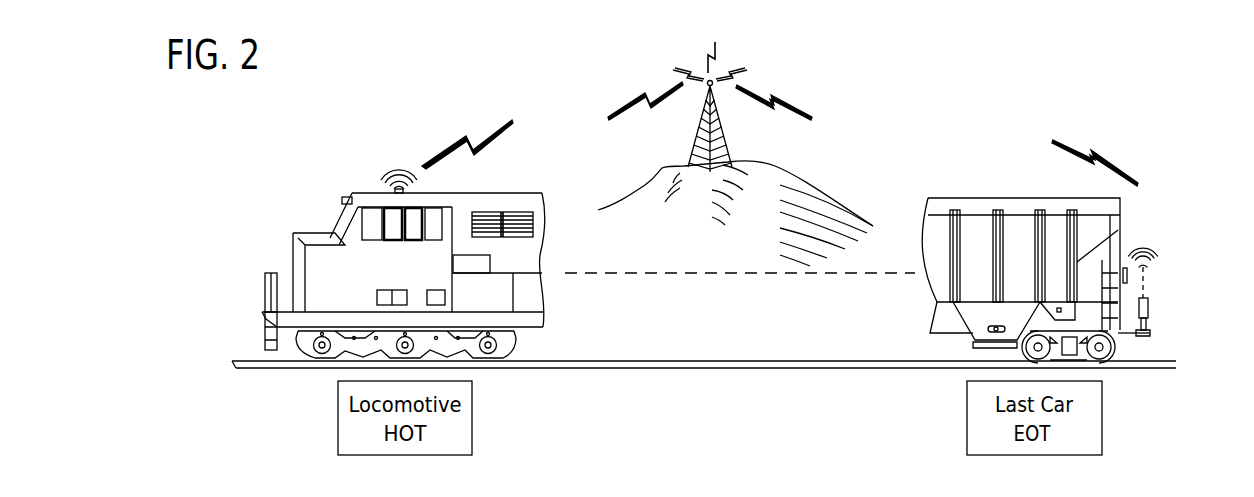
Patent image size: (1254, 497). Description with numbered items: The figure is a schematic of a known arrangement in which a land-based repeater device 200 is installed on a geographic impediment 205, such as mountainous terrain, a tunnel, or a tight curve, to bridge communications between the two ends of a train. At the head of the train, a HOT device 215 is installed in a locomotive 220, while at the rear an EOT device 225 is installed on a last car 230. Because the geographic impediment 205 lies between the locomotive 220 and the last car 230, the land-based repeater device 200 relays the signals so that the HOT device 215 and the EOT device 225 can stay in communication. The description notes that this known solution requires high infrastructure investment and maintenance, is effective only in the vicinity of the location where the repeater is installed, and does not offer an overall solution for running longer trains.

The land-based repeater device 200 is at (728, 64).
The geographic impediment 205 is at (800, 186).
The HOT device 215 is at (393, 164).
The locomotive 220 is at (494, 194).
The EOT device 225 is at (1156, 307).
The last car 230 is at (980, 198).